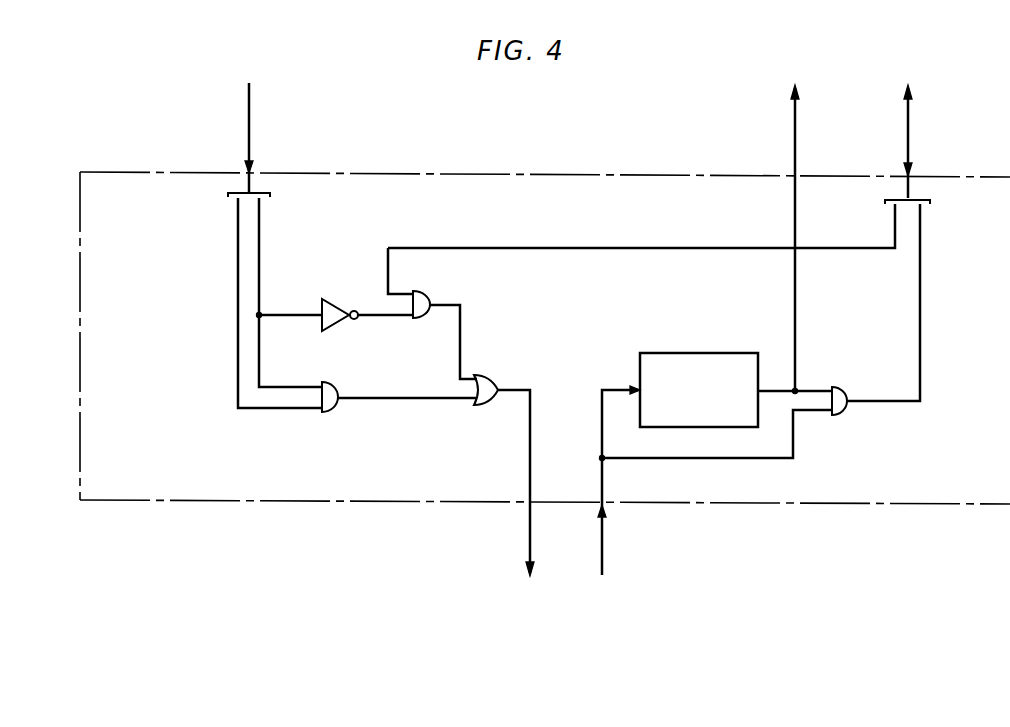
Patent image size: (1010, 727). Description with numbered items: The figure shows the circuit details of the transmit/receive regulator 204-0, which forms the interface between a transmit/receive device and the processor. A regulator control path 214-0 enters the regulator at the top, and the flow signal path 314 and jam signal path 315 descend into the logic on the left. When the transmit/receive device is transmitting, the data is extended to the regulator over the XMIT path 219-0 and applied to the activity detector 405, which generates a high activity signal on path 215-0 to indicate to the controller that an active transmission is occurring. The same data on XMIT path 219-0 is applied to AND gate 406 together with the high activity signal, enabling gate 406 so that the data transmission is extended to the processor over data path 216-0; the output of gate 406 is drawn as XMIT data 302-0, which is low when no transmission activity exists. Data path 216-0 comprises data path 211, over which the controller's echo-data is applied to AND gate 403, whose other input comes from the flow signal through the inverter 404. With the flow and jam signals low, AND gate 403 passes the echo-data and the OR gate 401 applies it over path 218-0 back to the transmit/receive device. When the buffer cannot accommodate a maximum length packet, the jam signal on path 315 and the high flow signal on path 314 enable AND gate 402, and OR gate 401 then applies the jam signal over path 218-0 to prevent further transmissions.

The regulator 204-0 is at (113, 171).
The regulator control path 214-0 is at (253, 110).
The activity signal path 215-0 is at (792, 142).
The data path 216-0 is at (905, 138).
The flow signal path 314 is at (261, 247).
The jam signal path 315 is at (236, 295).
The data path 211 is at (873, 250).
The XMIT data path 302-0 is at (923, 272).
The OR gate 401 is at (500, 376).
The AND gate 402 is at (338, 385).
The AND gate 403 is at (425, 292).
The inverter 404 is at (338, 297).
The activity detector 405 is at (697, 353).
The AND gate 406 is at (848, 413).
The RECV path 218-0 is at (528, 550).
The XMIT path 219-0 is at (603, 545).